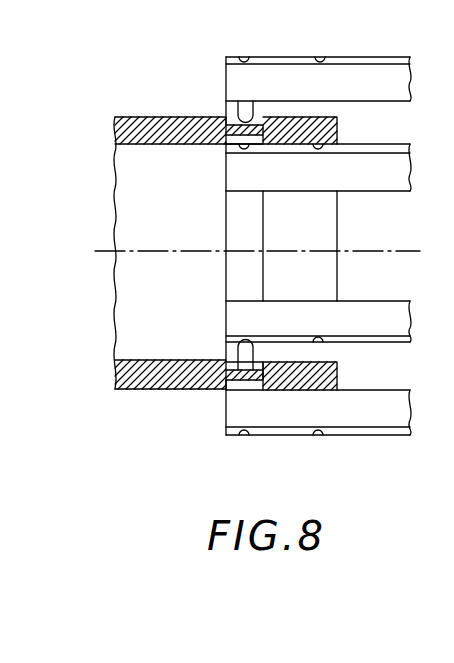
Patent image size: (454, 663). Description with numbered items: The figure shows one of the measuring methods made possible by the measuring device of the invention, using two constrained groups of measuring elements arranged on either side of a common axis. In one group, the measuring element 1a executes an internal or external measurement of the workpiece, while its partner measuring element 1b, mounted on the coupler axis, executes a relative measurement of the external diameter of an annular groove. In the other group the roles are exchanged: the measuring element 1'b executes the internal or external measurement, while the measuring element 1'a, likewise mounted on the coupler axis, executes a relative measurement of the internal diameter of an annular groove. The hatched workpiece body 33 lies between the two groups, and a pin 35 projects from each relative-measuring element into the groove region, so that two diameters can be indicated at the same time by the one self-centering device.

The measuring element of the first constrained group 1a is at (232, 176).
The measuring element of the first constrained group 1b is at (275, 57).
The measuring element of the second constrained group 1'a is at (294, 321).
The measuring element of the second constrained group 1'b is at (294, 416).
The spacer block 33 is at (148, 96).
The locating pin 35 is at (238, 107).